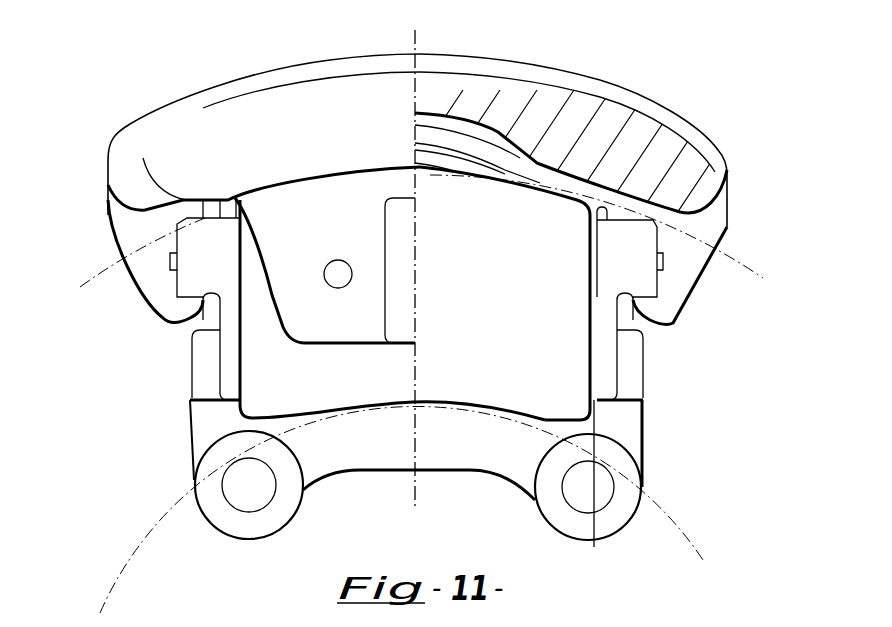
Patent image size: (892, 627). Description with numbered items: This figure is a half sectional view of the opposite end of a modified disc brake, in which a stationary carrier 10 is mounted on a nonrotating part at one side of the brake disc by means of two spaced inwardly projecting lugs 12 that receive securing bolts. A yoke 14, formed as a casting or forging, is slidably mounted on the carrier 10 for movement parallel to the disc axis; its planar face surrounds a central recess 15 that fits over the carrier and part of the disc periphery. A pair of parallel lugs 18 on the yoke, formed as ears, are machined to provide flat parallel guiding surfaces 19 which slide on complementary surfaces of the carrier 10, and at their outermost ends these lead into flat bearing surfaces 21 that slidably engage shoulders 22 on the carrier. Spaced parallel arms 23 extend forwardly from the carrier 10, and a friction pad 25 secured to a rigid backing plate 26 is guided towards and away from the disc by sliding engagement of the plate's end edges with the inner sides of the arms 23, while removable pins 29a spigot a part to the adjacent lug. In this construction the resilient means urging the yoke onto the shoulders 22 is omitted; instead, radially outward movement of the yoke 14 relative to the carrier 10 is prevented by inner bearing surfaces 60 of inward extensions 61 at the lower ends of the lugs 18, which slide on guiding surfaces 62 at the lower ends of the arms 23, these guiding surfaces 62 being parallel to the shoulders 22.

The carrier 10 is at (365, 458).
The lugs 12 is at (263, 525).
The yoke 14 is at (313, 95).
The central recess 15 is at (487, 135).
The parallel lugs 18 is at (147, 236).
The guiding surfaces 19 is at (177, 282).
The bearing surfaces 21 is at (204, 200).
The shoulders 22 is at (177, 265).
The arms 23 is at (227, 240).
The friction pad 25 is at (492, 395).
The backing plate 26 is at (594, 540).
The removable pins 29a is at (333, 284).
The inner bearing surfaces 60 is at (183, 318).
The inward extensions 61 is at (190, 316).
The guiding surfaces 62 is at (185, 355).